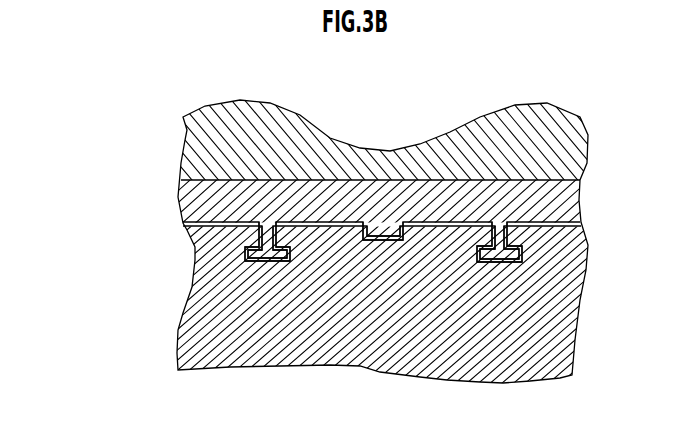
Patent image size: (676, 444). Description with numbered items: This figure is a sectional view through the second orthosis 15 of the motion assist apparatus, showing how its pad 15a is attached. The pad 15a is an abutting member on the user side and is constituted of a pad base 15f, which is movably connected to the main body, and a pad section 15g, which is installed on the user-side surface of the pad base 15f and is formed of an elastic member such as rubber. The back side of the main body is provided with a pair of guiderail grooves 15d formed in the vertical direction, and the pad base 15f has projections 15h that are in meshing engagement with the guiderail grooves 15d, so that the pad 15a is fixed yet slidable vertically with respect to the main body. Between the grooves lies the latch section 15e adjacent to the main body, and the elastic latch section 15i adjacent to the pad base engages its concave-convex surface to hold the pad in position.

The second orthosis 15 is at (131, 180).
The pad 15a is at (320, 112).
The guiderail grooves 15d is at (280, 263).
The latch section adjacent to the main body 15e is at (377, 242).
The pad base 15f is at (368, 195).
The pad section 15g is at (465, 165).
The projections 15h is at (243, 250).
The latch section adjacent to the pad base 15i is at (392, 228).